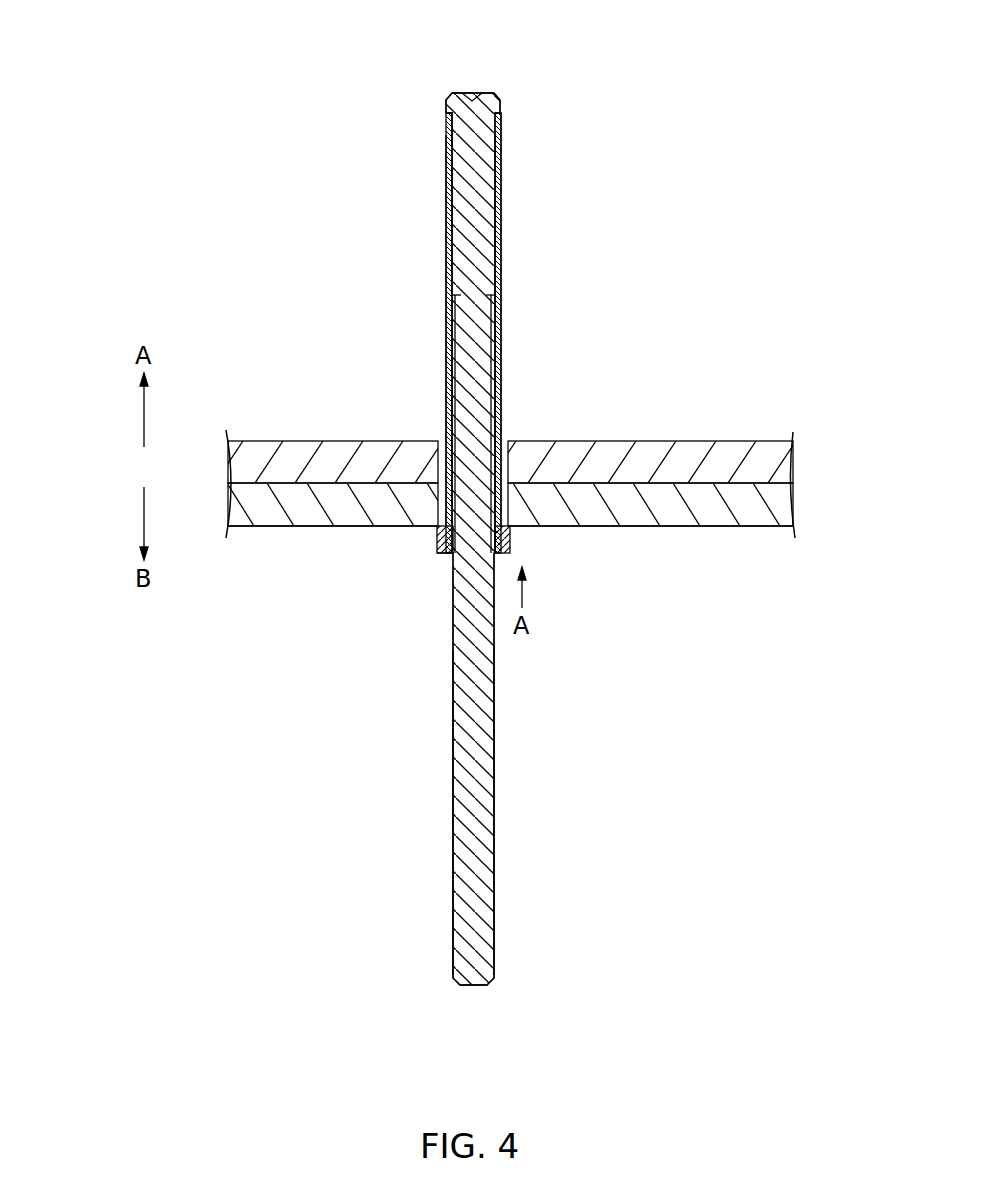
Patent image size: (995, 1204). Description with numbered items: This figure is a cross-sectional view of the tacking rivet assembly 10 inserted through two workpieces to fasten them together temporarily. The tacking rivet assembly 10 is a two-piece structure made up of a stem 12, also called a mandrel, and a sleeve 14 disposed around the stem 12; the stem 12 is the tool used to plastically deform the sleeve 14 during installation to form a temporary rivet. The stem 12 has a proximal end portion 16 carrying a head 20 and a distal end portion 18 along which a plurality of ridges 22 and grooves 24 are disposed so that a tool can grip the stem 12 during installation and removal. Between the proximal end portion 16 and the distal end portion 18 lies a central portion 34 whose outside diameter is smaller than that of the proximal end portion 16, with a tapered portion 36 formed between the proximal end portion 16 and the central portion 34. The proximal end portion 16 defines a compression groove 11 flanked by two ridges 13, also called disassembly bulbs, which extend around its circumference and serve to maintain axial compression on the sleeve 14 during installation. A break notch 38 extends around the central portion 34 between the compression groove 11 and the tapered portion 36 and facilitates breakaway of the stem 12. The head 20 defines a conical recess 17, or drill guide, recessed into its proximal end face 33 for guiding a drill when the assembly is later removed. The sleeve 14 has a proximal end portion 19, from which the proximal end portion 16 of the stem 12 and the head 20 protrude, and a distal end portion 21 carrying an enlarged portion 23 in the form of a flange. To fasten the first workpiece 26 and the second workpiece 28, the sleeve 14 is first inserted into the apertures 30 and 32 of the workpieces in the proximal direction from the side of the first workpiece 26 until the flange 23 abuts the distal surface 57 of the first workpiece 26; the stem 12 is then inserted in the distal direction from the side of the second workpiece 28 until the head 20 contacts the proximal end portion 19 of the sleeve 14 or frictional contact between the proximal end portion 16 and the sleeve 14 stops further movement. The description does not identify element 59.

The tacking rivet assembly 10 is at (607, 64).
The compression groove 11 is at (500, 140).
The stem 12 is at (473, 636).
The ridges 13 is at (447, 135).
The sleeve 14 is at (500, 203).
The proximal end portion 16 is at (509, 122).
The recess 17 is at (470, 92).
The distal end portion 18 is at (444, 913).
The proximal end portion 19 is at (438, 120).
The head 20 is at (494, 98).
The distal end portion 21 is at (428, 540).
The ridges 22 is at (494, 795).
The enlarged portion 23 is at (445, 556).
The grooves 24 is at (453, 853).
The first workpiece 26 is at (762, 528).
The second workpiece 28 is at (737, 440).
The aperture 30 is at (519, 525).
The aperture 32 is at (515, 449).
The proximal end face 33 is at (459, 92).
The central portion 34 is at (476, 366).
The tapered portion 36 is at (443, 310).
The break notch 38 is at (495, 294).
The distal surface 57 is at (650, 528).
The upper panel surface 59 is at (662, 440).